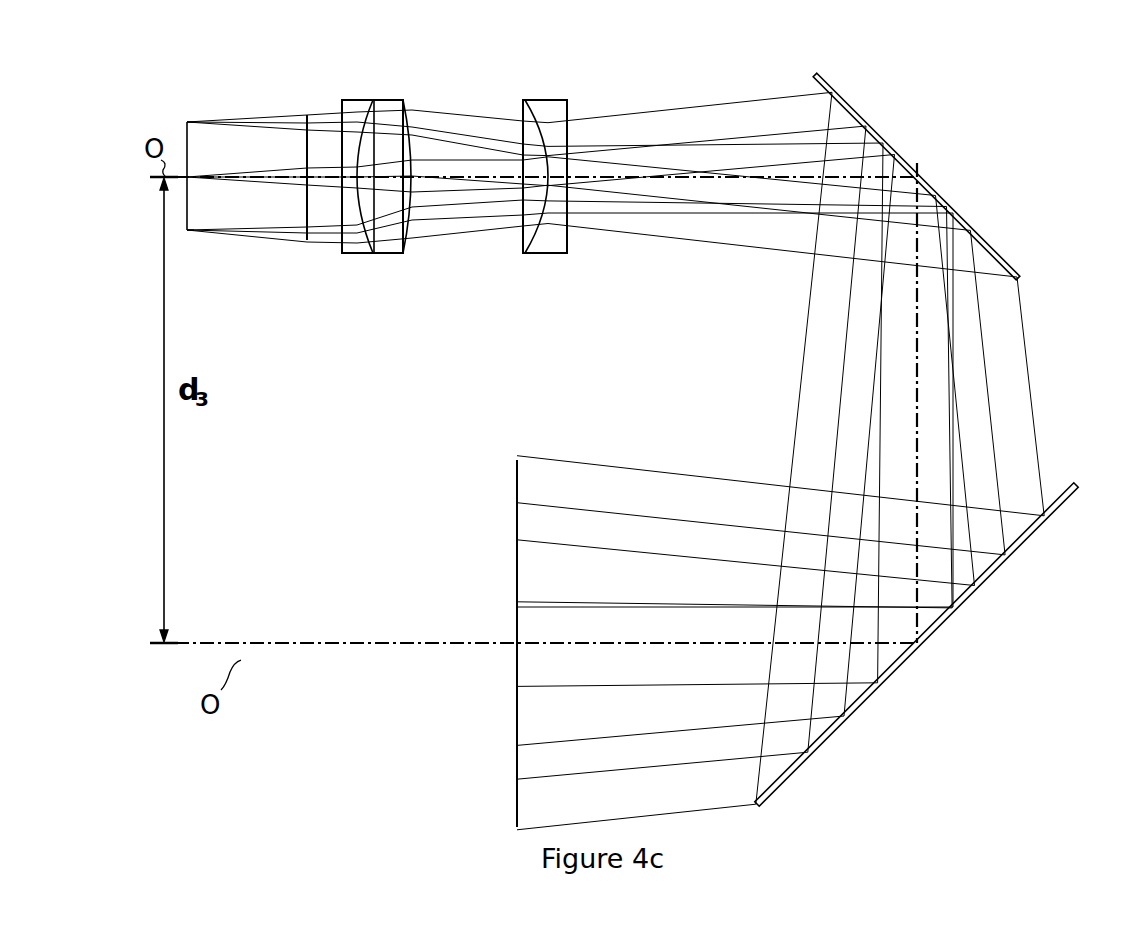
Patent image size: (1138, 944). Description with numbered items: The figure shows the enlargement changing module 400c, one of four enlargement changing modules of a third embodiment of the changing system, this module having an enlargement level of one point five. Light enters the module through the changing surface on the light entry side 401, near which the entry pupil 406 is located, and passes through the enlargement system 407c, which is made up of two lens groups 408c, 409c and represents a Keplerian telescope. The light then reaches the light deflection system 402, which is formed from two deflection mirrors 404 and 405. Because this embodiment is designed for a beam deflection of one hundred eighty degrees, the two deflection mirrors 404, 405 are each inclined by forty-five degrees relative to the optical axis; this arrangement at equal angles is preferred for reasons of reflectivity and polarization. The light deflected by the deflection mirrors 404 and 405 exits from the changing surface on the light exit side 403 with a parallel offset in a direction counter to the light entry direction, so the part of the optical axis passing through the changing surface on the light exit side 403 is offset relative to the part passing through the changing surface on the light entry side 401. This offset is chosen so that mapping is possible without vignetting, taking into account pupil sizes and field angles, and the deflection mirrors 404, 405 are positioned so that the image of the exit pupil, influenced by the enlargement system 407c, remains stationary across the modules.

The enlargement changing module 400c is at (652, 90).
The changing surface on the light entry side 401 is at (307, 150).
The light deflection system 402 is at (1058, 438).
The changing surface on the light exit side 403 is at (513, 495).
The deflection mirror 404 is at (963, 216).
The deflection mirror 405 is at (1007, 562).
The entry pupil 406 is at (187, 142).
The enlargement system 407c is at (340, 265).
The lens group 408c is at (400, 100).
The lens group 409c is at (552, 97).